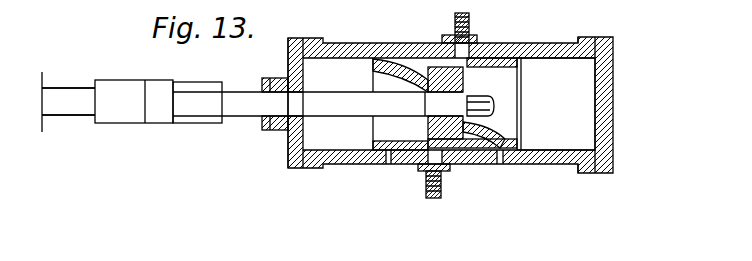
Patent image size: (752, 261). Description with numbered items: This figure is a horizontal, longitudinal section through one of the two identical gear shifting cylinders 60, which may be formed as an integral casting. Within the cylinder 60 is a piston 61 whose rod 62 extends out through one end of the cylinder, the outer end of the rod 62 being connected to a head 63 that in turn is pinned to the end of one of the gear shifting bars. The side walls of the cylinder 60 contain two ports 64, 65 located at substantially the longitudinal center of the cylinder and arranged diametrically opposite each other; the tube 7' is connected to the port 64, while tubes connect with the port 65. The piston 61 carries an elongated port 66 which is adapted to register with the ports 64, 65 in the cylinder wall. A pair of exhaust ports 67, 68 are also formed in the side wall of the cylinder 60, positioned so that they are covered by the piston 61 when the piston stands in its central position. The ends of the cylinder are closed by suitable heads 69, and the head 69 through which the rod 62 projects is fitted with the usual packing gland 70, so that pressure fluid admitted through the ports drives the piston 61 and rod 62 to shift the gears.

The gear shifting cylinder 60 is at (530, 45).
The piston 61 is at (512, 95).
The piston rod 62 is at (347, 105).
The head 63 is at (122, 89).
The port 64 is at (422, 168).
The port 65 is at (480, 44).
The elongated port 66 is at (425, 66).
The exhaust port 67 is at (388, 158).
The exhaust port 68 is at (508, 164).
The head 69 is at (288, 68).
The packing gland 70 is at (263, 118).
The tube 7' is at (443, 192).